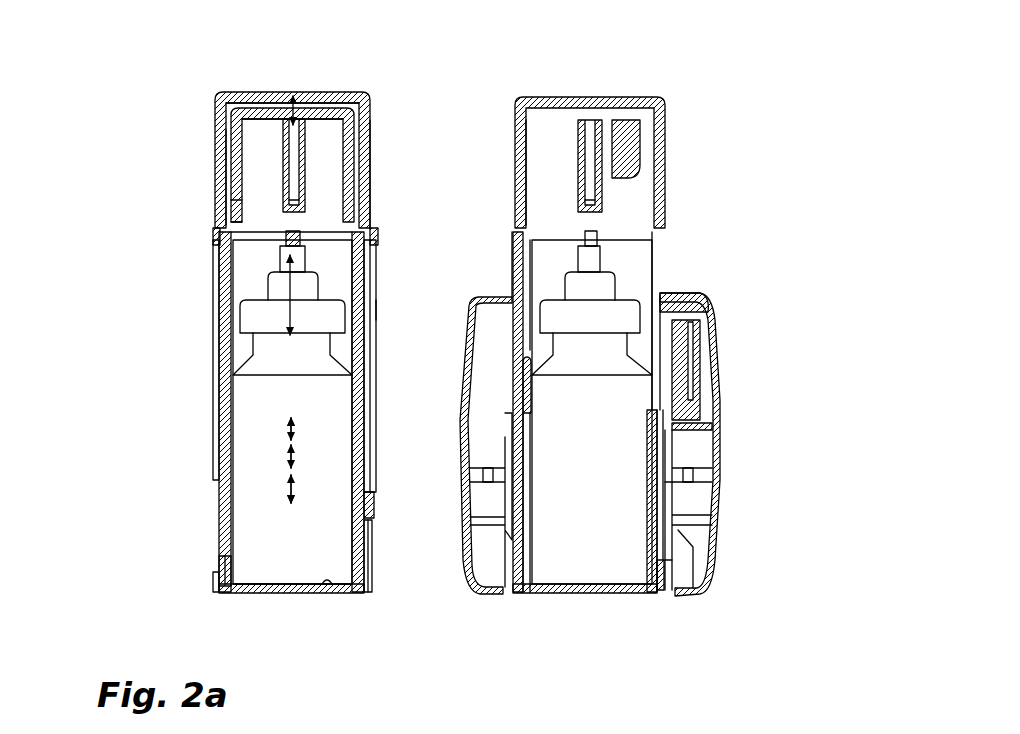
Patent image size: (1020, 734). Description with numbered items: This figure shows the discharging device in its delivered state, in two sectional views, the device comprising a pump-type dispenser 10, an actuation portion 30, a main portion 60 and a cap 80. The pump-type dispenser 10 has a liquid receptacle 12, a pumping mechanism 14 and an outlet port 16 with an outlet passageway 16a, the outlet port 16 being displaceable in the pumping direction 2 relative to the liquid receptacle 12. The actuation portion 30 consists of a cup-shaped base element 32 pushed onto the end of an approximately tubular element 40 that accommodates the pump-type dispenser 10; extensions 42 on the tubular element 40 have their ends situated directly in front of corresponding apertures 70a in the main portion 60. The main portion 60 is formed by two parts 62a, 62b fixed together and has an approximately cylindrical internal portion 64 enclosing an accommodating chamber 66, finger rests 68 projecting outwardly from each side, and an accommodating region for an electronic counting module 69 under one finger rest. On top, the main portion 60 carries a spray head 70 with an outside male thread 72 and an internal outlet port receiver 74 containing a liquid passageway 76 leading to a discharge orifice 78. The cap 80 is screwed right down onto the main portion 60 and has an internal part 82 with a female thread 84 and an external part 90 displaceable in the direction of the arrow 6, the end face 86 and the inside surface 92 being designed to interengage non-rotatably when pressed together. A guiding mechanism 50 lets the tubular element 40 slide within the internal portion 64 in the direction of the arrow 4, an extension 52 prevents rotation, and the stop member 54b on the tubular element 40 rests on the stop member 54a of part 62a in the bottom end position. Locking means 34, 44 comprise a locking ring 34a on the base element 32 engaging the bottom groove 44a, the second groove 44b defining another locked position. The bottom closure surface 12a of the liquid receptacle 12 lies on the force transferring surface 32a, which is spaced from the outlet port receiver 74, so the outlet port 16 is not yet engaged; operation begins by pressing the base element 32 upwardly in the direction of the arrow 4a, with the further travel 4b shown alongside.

The pumping direction 2 is at (268, 283).
The arrow 4 is at (284, 463).
The arrow 4a is at (284, 432).
The second travel portion 4b is at (284, 493).
The arrow 6 is at (300, 115).
The pump-type dispenser 10 is at (542, 418).
The liquid receptacle 12 is at (243, 388).
The bottom closure surface 12a is at (327, 592).
The pumping mechanism 14 is at (240, 318).
The outlet port 16 is at (282, 262).
The outlet passageway 16a is at (286, 240).
The actuation portion 30 is at (365, 525).
The base element 32 is at (370, 522).
The force transferring surface 32a is at (266, 592).
The locking means 34 is at (222, 563).
The locking ring 34a is at (222, 555).
The tubular element 40 is at (376, 470).
The extensions 42 is at (376, 240).
The locking means 44 is at (228, 572).
The groove 44a is at (366, 560).
The groove 44b is at (366, 535).
The guiding mechanism 50 is at (518, 363).
The extension 52 is at (695, 408).
The stop member 54a is at (663, 562).
The stop member 54b is at (670, 495).
The main portion 60 is at (375, 310).
The part 62a is at (710, 318).
The part 62b is at (720, 482).
The internal portion 64 is at (527, 273).
The accommodating chamber 66 is at (515, 265).
The finger rests 68 is at (690, 302).
The electronic counting module 69 is at (686, 320).
The spray head 70 is at (362, 118).
The apertures 70a is at (220, 205).
The male thread 72 is at (520, 100).
The outlet port receiver 74 is at (312, 160).
The liquid passageway 76 is at (590, 165).
The discharge orifice 78 is at (640, 185).
The cap 80 is at (374, 155).
The internal part 82 is at (228, 150).
The female thread 84 is at (235, 122).
The end face 86 is at (257, 112).
The external part 90 is at (240, 103).
The inside surface 92 is at (290, 108).